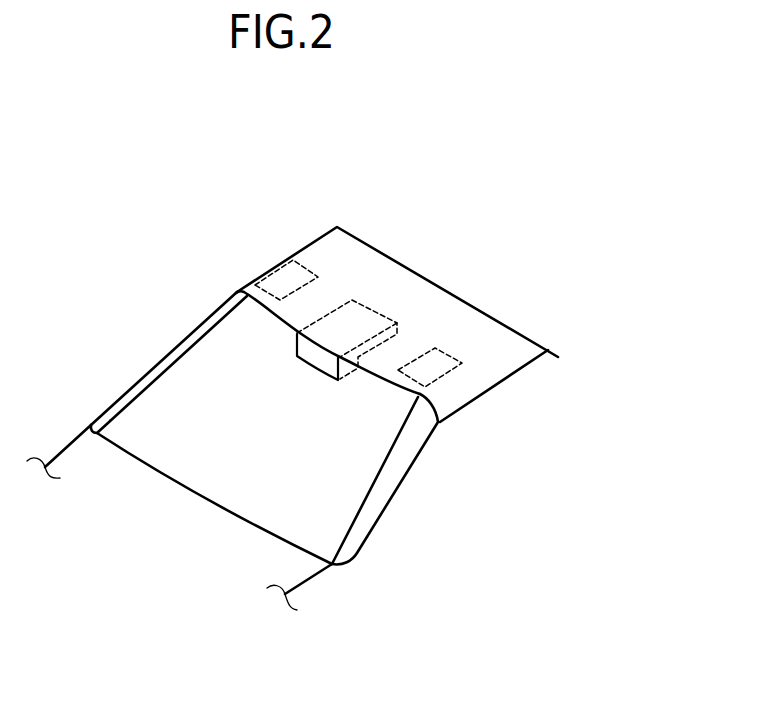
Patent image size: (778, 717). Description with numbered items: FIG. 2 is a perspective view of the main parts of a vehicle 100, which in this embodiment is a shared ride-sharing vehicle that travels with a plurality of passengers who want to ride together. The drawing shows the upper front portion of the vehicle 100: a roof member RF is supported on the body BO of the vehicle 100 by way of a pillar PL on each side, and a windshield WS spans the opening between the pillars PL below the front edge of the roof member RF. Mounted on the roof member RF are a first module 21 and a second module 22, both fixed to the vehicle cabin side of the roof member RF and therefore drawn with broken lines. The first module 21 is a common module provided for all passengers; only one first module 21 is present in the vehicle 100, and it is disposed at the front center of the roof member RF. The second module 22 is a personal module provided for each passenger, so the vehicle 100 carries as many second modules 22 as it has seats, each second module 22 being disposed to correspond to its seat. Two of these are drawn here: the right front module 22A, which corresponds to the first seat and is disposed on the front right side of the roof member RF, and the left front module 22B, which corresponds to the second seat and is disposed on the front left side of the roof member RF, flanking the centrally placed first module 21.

The vehicle 100 is at (198, 264).
The first module 21 is at (344, 314).
The second module 22 is at (350, 253).
The right front module 22A is at (282, 262).
The left front module 22B is at (442, 349).
The windshield WS is at (218, 390).
The roof member RF is at (457, 320).
The pillar PL is at (129, 367).
The body BO is at (276, 572).